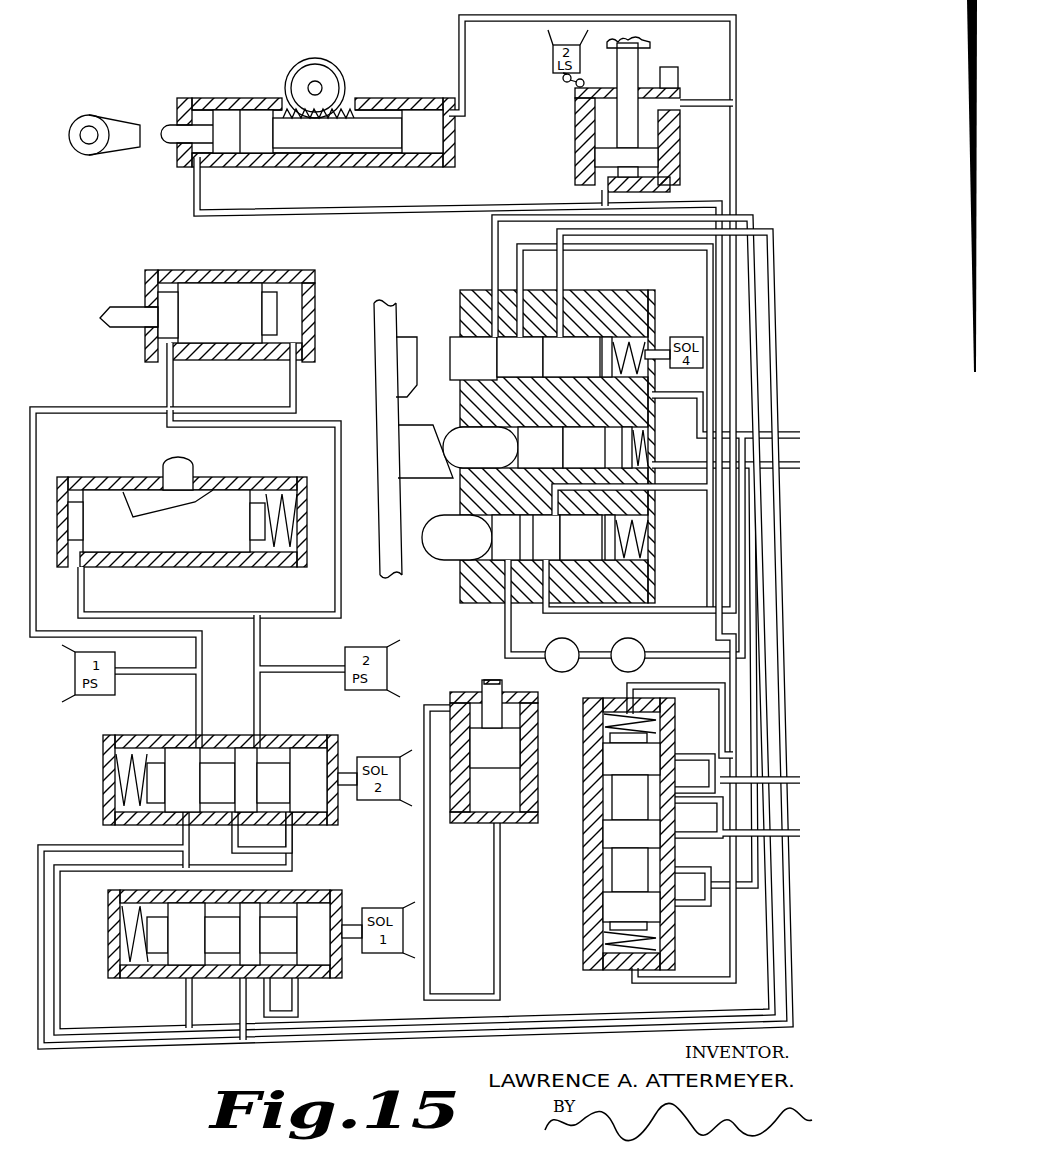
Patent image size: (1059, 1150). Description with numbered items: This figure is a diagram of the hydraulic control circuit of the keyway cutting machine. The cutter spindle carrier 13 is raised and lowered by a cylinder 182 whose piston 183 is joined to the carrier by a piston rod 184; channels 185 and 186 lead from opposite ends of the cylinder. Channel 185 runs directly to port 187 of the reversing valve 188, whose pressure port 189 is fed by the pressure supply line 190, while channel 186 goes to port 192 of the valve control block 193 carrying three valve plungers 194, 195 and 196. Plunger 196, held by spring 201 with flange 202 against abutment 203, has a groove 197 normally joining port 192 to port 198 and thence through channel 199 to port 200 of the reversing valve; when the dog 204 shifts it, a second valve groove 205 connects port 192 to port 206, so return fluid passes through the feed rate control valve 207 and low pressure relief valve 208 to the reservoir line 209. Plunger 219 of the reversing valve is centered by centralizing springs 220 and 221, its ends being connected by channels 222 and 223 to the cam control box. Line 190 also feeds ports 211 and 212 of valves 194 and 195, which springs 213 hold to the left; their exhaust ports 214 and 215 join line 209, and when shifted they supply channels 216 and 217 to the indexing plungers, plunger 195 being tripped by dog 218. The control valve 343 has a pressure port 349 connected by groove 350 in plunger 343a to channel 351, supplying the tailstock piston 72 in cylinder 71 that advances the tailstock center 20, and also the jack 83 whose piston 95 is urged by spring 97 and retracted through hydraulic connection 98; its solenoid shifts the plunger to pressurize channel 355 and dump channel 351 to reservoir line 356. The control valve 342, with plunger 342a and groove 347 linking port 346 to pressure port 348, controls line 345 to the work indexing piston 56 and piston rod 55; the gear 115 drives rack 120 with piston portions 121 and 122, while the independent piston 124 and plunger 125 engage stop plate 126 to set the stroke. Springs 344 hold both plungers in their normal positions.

The piston portion 121 is at (257, 122).
The independent piston 124 is at (227, 147).
The rack 120 is at (362, 112).
The piston portion 122 is at (427, 145).
The gear 115 is at (305, 70).
The piston rod or plunger 125 is at (177, 133).
The stop plate 126 is at (117, 143).
The cylinder 182 is at (673, 130).
The piston rod 184 is at (630, 65).
The cutter spindle carrier 13 is at (640, 42).
The piston 183 is at (653, 160).
The channel 185 is at (697, 105).
The channel 186 is at (603, 197).
The cylinder 71 is at (278, 280).
The piston 72 is at (232, 290).
The tailstock center 20 is at (124, 315).
The dog 204 is at (406, 345).
The dog 218 is at (418, 470).
The hydraulic connection 98 is at (78, 560).
The piston 95 is at (230, 500).
The jack 83 is at (180, 460).
The spring 97 is at (283, 495).
The valve control block 193 is at (468, 298).
The valve plunger 194 is at (473, 358).
The valve exhaust port 214 is at (520, 357).
The pressure port 211 is at (563, 330).
The springs 213 is at (643, 340).
The channel 217 is at (693, 392).
The valve plunger 195 is at (480, 447).
The valve exhaust port 215 is at (540, 447).
The port 212 is at (605, 447).
The valve plunger 196 is at (457, 537).
The second valve groove 205 is at (500, 514).
The port 198 is at (555, 512).
The groove 197 is at (552, 538).
The spring 201 is at (640, 540).
The channel 199 is at (683, 513).
The flange 202 is at (600, 565).
The abutment 203 is at (633, 588).
The channel 216 is at (710, 487).
The channel 223 is at (693, 688).
The reservoir line 209 is at (492, 222).
The pressure supply line 190 is at (556, 233).
The port 192 is at (511, 612).
The port 206 is at (500, 566).
The reservoir line 356 is at (432, 943).
The line 345 is at (500, 865).
The channel 351 is at (195, 650).
The channel 355 is at (262, 643).
The pressure port 349 is at (233, 818).
The port 346 is at (207, 972).
The pressure port 348 is at (238, 974).
The port 200 is at (667, 795).
The pressure port 189 is at (667, 834).
The port 187 is at (665, 871).
The control valve 343 is at (117, 817).
The springs 344 is at (133, 776).
The groove 350 is at (220, 773).
The plunger 343a is at (307, 803).
The control valve 342 is at (113, 973).
The groove 347 is at (217, 923).
The plunger 342a is at (313, 952).
The piston 56 is at (512, 753).
The piston rod 55 is at (492, 676).
The feed rate control valve 207 is at (560, 672).
The low pressure relief valve 208 is at (642, 660).
The reversing valve 188 is at (588, 887).
The centralizing spring 221 is at (602, 722).
The plunger 219 is at (613, 910).
The centralizing spring 220 is at (610, 940).
The channel 222 is at (645, 983).